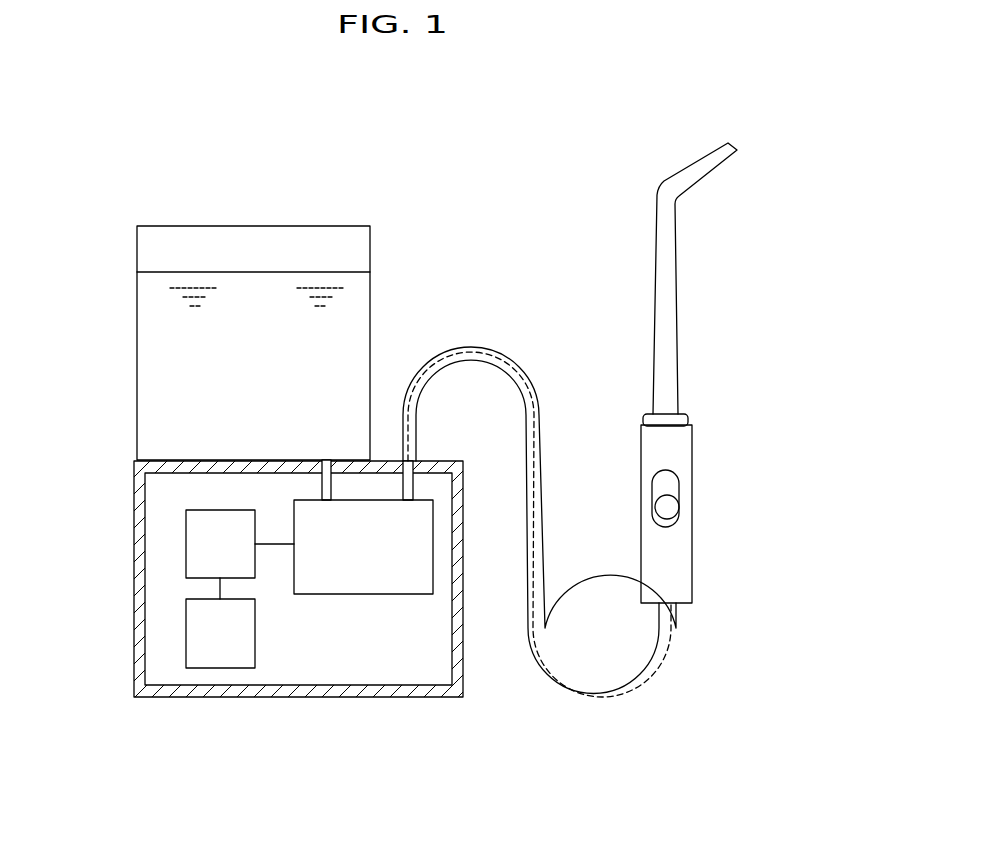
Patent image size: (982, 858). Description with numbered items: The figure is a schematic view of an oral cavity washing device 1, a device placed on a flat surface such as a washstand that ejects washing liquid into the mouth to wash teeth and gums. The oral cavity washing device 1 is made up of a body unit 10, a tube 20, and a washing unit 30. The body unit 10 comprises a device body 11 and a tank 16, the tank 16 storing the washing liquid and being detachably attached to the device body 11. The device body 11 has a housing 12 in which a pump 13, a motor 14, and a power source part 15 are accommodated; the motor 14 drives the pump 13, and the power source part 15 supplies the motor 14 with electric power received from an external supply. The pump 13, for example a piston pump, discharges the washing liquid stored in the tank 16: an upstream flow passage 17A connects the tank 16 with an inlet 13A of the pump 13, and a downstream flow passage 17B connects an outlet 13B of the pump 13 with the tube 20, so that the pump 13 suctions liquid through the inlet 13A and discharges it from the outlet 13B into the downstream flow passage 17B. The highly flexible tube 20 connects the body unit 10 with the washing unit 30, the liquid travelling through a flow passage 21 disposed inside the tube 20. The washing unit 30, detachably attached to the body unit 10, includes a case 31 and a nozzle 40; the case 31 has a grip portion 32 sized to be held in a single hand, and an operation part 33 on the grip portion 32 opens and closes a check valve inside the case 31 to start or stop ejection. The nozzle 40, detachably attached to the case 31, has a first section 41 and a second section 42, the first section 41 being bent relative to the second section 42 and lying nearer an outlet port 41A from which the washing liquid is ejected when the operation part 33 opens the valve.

The oral cavity washing device 1 is at (120, 178).
The body unit 10 is at (404, 228).
The device body 11 is at (134, 503).
The housing 12 is at (435, 460).
The pump 13 is at (397, 595).
The inlet 13A is at (315, 500).
The outlet 13B is at (422, 500).
The motor 14 is at (238, 508).
The power source part 15 is at (257, 650).
The tank 16 is at (370, 290).
The upstream flow passage 17A is at (315, 462).
The downstream flow passage 17B is at (414, 480).
The tube 20 is at (539, 491).
The flow passage 21 is at (538, 508).
The washing unit 30 is at (622, 206).
The case 31 is at (692, 452).
The grip portion 32 is at (692, 498).
The operation part 33 is at (672, 505).
The nozzle 40 is at (706, 265).
The first section 41 is at (706, 162).
The outlet port 41A is at (740, 150).
The second section 42 is at (655, 327).